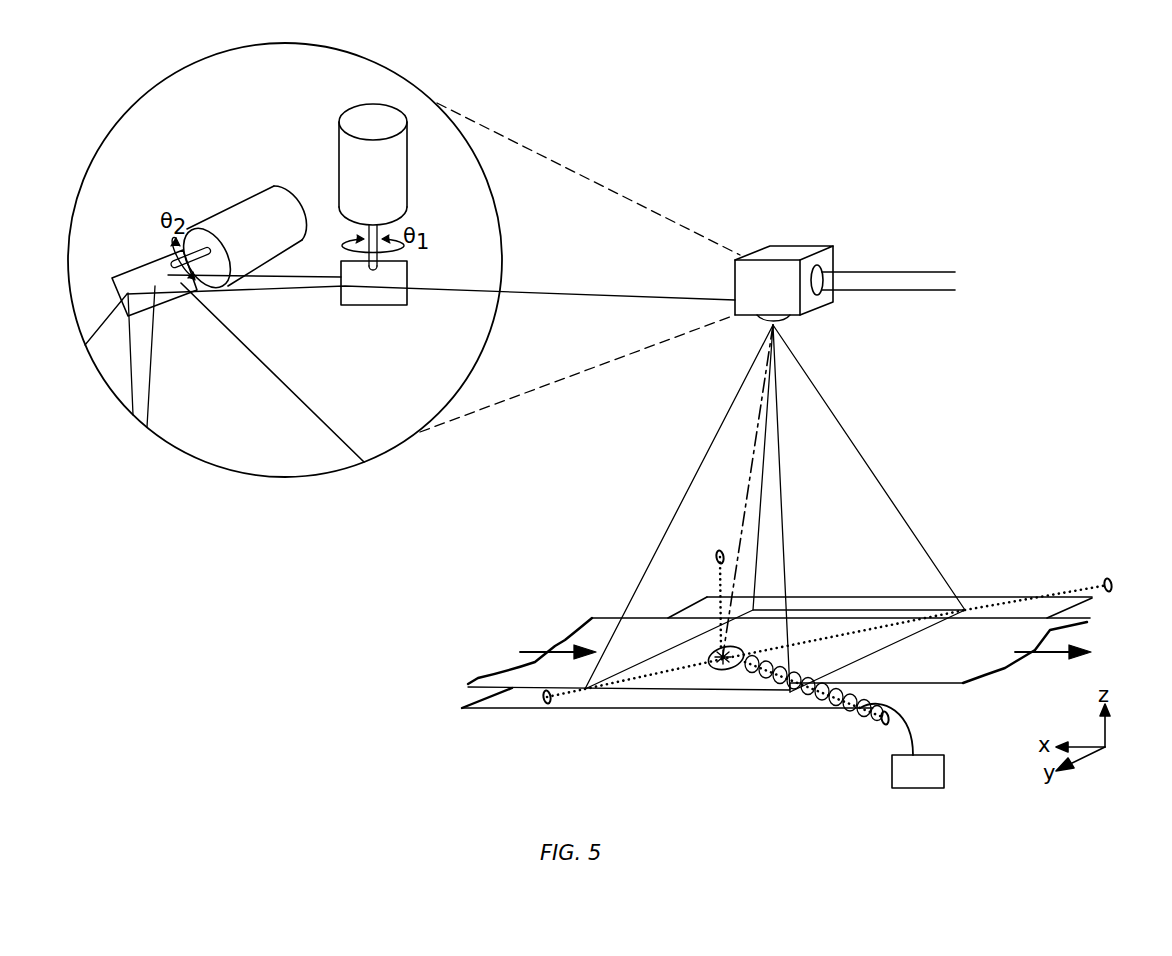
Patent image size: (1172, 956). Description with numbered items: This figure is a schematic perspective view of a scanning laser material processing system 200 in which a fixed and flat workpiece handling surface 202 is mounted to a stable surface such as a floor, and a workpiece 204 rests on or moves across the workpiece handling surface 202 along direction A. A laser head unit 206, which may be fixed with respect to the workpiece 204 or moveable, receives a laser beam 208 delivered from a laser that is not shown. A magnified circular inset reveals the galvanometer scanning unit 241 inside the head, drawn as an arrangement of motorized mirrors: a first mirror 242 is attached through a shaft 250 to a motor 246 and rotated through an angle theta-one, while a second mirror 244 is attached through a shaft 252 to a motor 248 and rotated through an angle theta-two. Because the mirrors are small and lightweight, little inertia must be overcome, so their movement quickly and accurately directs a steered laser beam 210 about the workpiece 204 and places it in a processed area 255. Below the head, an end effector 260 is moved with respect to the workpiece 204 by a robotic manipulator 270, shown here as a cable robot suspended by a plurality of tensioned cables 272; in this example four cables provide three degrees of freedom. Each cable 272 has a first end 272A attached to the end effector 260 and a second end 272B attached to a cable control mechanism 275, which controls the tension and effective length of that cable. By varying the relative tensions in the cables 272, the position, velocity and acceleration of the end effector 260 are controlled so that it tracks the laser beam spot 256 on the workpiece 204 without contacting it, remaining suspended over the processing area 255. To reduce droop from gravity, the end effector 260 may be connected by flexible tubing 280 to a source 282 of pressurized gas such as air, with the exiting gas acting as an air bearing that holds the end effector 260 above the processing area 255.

The scanning laser material processing system 200 is at (858, 192).
The workpiece handling surface 202 is at (505, 703).
The workpiece 204 is at (590, 630).
The laser head unit 206 is at (783, 250).
The laser beam 208 is at (907, 277).
The steered laser beam 210 is at (290, 402).
The galvanometer scanning unit 241 is at (128, 112).
The mirror 242 is at (380, 305).
The mirror 244 is at (145, 302).
The motor 246 is at (346, 147).
The motor 248 is at (228, 218).
The shaft 250 is at (382, 271).
The shaft 252 is at (153, 268).
The processed area 255 is at (770, 680).
The laser beam spot 256 is at (723, 672).
The end effector 260 is at (713, 667).
The robotic manipulator 270 is at (1049, 572).
The cables 272 is at (700, 602).
The first end of cable 272A is at (827, 693).
The second end of cable 272B is at (717, 578).
The cable control mechanism 275 is at (717, 550).
The flexible tubing 280 is at (915, 730).
The source of pressurized gas 282 is at (918, 771).